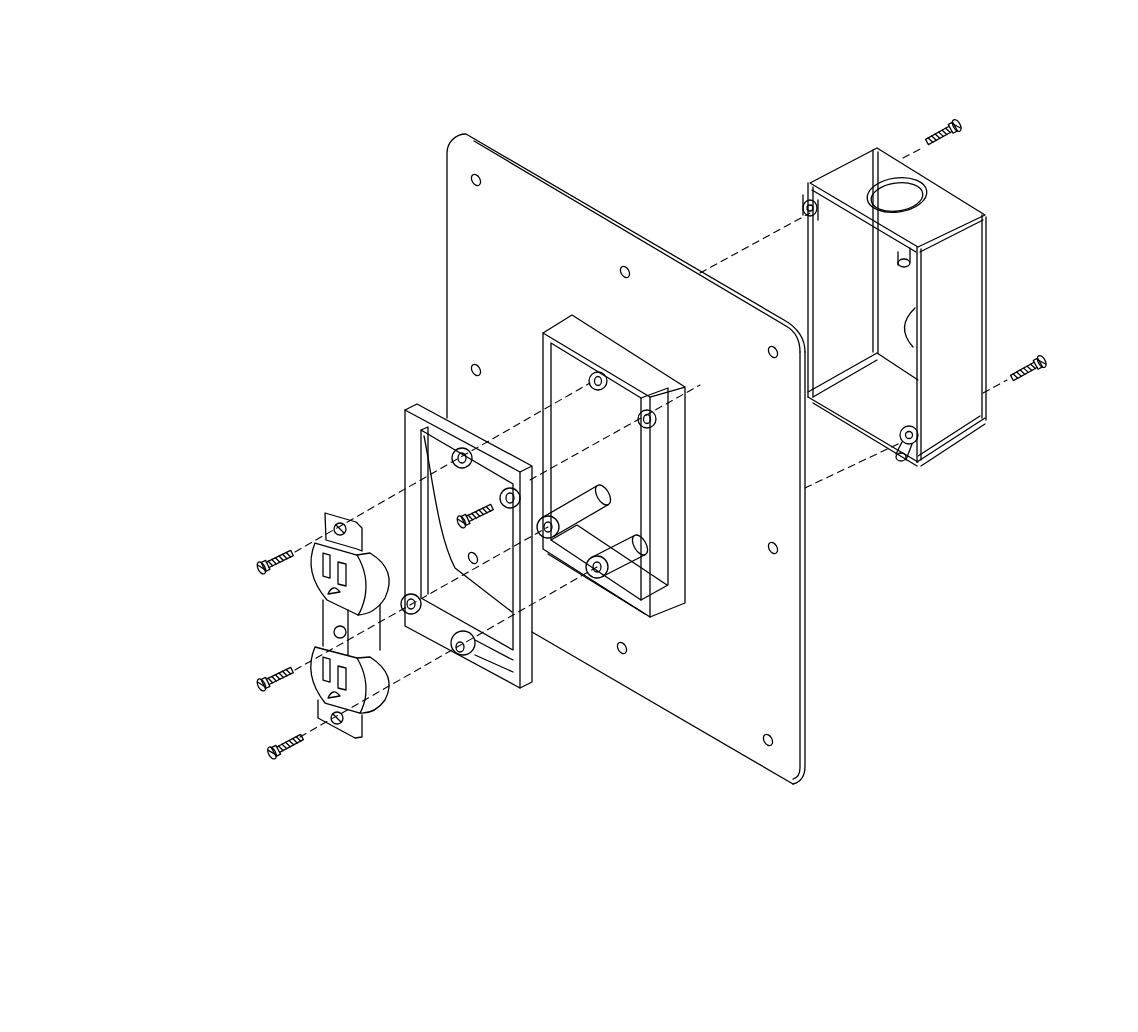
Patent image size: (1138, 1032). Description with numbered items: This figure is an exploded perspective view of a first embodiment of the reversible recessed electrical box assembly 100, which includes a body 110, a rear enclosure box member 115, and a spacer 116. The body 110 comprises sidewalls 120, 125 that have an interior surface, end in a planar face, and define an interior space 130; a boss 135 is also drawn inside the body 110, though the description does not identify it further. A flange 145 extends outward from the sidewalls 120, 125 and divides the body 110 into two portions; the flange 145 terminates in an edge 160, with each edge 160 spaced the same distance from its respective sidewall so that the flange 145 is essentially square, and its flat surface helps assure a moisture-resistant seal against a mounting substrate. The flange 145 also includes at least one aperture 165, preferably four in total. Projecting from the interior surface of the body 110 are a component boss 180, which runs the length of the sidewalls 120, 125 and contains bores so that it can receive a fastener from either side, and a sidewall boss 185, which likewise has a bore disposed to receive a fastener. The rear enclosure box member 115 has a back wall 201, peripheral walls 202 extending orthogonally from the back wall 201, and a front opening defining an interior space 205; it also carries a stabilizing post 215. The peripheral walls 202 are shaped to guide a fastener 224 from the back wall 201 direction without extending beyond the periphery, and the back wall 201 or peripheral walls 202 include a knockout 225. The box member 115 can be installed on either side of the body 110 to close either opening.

The electrical box assembly 100 is at (393, 268).
The body 110 is at (447, 333).
The rear enclosure box member 115 is at (963, 448).
The spacer 116 is at (403, 417).
The sidewall 120 is at (562, 373).
The sidewall 125 is at (634, 580).
The interior space 130 is at (620, 467).
The mounting boss 135 is at (617, 560).
The flange 145 is at (737, 647).
The edge 160 is at (685, 732).
The aperture 165 is at (471, 176).
The component boss 180 is at (600, 575).
The sidewall boss 185 is at (574, 520).
The back wall 201 is at (888, 335).
The peripheral walls 202 is at (957, 313).
The interior space 205 is at (872, 288).
The stabilizing post 215 is at (903, 258).
The fastener 224 is at (927, 128).
The knockout 225 is at (893, 190).